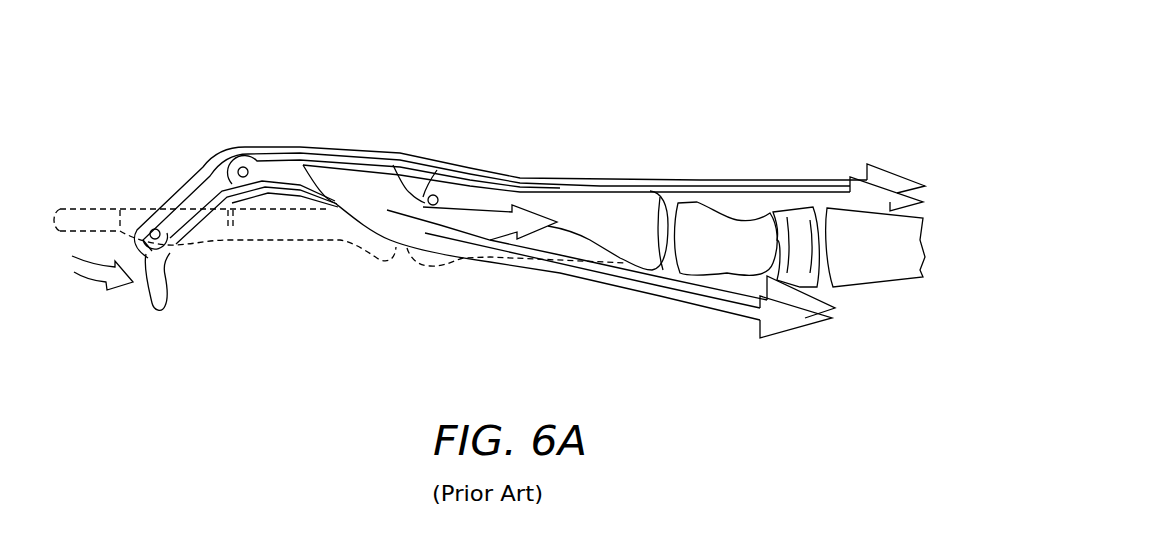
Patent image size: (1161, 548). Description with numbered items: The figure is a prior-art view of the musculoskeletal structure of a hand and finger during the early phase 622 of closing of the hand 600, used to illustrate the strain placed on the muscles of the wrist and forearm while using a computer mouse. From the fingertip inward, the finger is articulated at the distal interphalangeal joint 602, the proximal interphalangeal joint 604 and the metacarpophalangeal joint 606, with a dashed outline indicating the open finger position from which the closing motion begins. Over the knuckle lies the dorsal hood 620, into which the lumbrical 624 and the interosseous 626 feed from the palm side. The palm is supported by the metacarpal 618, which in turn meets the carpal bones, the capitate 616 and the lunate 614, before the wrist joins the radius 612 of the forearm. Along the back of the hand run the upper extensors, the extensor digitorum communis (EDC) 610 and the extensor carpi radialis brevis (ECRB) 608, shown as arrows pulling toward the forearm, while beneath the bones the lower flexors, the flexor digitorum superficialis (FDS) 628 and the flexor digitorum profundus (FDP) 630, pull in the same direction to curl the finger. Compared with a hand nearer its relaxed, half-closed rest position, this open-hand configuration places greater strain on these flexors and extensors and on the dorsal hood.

The closing of the hand 600 is at (528, 38).
The distal interphalangeal joint 602 is at (138, 182).
The proximal interphalangeal joint 604 is at (239, 122).
The metacarpophalangeal joint 606 is at (456, 155).
The extensor carpi radialis brevis (ECRB) 608 is at (866, 189).
The extensor digitorum communis (EDC) 610 is at (884, 178).
The radius 612 is at (875, 247).
The lunate 614 is at (806, 247).
The capitate 616 is at (717, 236).
The metacarpal 618 is at (596, 230).
The dorsal hood 620 is at (370, 188).
The early phase 622 is at (137, 300).
The lumbrical 624 is at (417, 246).
The interosseous 626 is at (528, 237).
The flexor digitorum superficialis (FDS) 628 is at (788, 335).
The flexor digitorum profundus (FDP) 630 is at (822, 303).